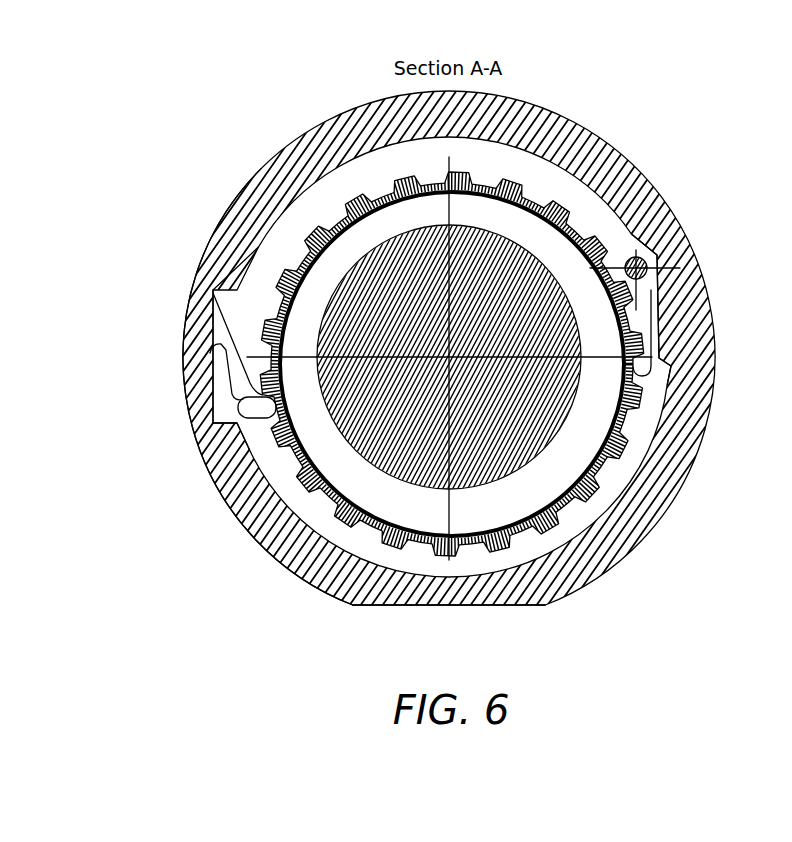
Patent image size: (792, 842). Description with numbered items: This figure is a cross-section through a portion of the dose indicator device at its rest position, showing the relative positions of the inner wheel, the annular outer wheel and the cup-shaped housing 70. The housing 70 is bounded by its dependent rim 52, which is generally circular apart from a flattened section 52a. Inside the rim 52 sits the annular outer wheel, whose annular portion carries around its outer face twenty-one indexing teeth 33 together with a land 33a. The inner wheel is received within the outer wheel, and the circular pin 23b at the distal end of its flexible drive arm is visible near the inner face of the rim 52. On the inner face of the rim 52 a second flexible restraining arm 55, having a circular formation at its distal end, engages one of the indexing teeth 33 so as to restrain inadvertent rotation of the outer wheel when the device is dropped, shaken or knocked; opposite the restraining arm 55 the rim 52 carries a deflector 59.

The cup-shaped housing 70 is at (572, 121).
The dependent rim 52 is at (331, 131).
The flattened section 52a is at (392, 611).
The deflector 59 is at (663, 328).
The circular pin 23b is at (656, 251).
The indexing teeth 33 is at (320, 490).
The land 33a is at (617, 450).
The second flexible restraining arm 55 is at (263, 402).